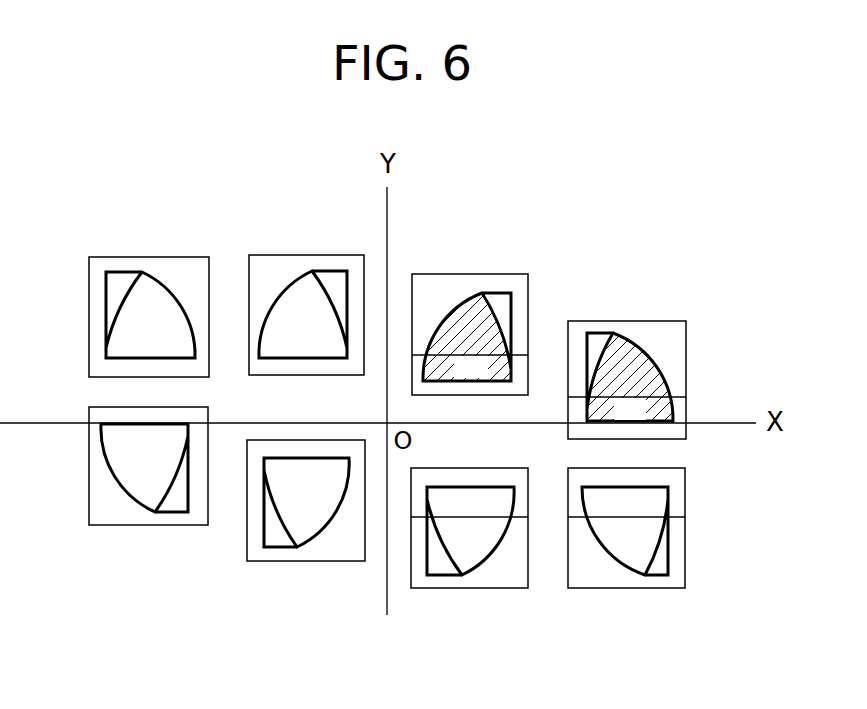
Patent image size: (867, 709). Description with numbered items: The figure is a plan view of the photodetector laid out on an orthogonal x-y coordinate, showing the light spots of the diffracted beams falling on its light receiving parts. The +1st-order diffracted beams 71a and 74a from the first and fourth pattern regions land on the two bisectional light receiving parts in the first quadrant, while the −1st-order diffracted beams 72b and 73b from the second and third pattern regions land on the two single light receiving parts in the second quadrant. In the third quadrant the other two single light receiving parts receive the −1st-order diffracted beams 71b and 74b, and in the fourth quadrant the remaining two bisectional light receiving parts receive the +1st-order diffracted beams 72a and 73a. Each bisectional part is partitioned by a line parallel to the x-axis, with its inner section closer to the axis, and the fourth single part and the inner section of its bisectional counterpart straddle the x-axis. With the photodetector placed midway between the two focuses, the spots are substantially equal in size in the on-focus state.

The +1st-order diffracted beam 71a is at (496, 293).
The −1st-order diffracted beam 71b is at (307, 548).
The +1st-order diffracted beam 72a is at (644, 575).
The −1st-order diffracted beam 72b is at (138, 271).
The +1st-order diffracted beam 73a is at (465, 575).
The −1st-order diffracted beam 73b is at (329, 272).
The +1st-order diffracted beam 74a is at (611, 333).
The −1st-order diffracted beam 74b is at (177, 512).